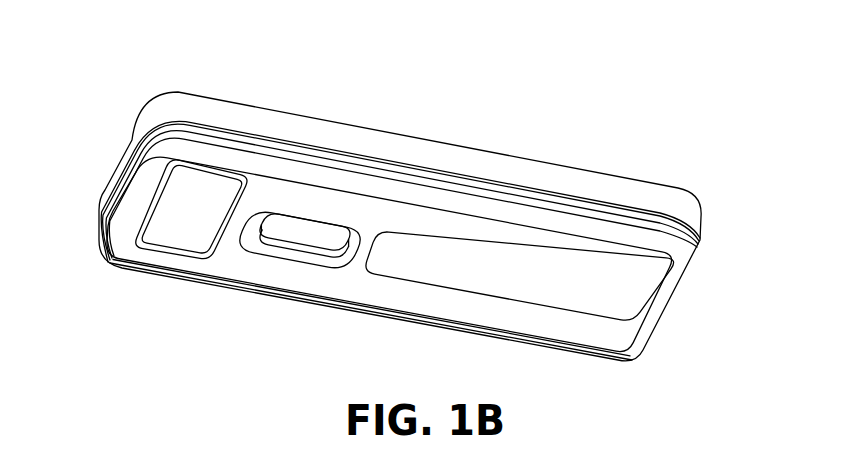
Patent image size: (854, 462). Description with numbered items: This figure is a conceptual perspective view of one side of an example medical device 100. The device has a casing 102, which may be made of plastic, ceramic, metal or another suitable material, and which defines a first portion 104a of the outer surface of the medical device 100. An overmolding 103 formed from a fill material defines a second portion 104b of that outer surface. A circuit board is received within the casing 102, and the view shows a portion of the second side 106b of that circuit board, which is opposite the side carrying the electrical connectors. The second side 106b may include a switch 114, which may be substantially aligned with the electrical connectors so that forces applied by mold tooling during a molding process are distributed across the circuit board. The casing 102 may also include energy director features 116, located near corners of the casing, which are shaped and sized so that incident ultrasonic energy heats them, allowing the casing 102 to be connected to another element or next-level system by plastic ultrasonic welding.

The medical device 100 is at (412, 193).
The casing 102 is at (638, 195).
The overmolding 103 is at (680, 248).
The first portion of outer surface 104a is at (155, 102).
The second portion of outer surface 104b is at (109, 257).
The second side of circuit board 106b is at (358, 219).
The switch 114 is at (296, 243).
The energy director features 116 is at (277, 208).